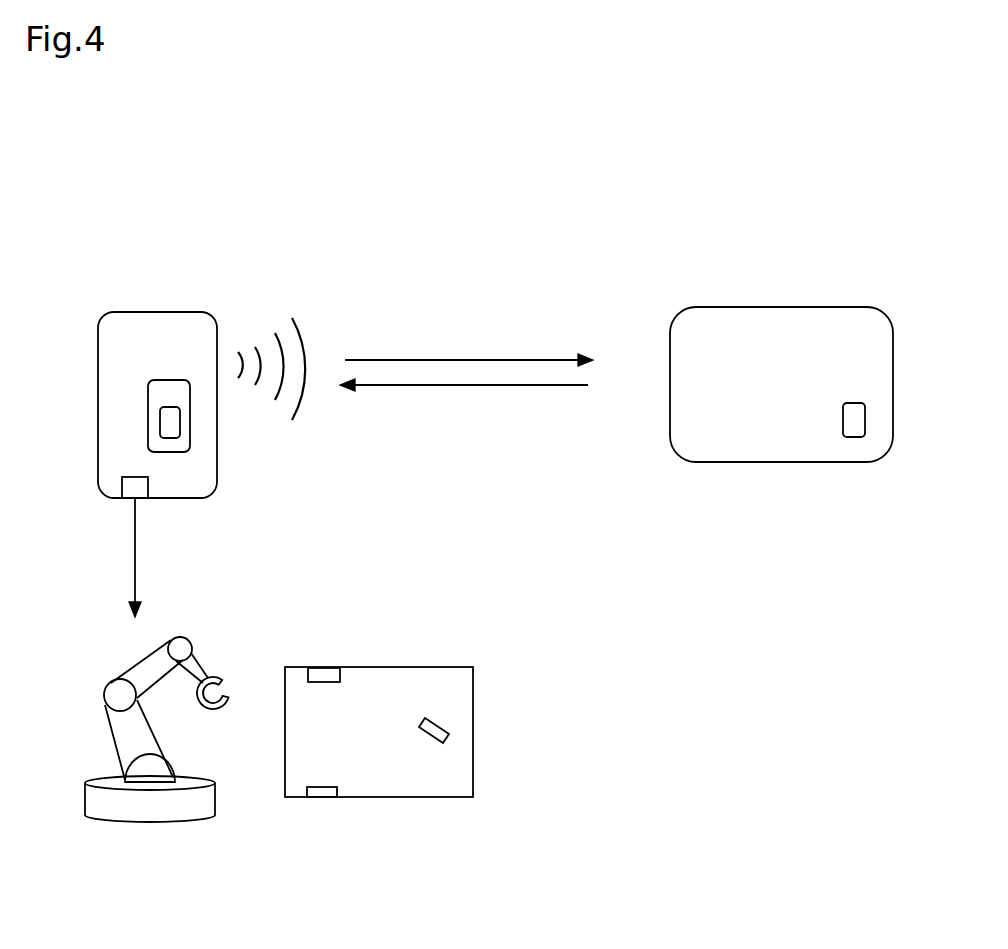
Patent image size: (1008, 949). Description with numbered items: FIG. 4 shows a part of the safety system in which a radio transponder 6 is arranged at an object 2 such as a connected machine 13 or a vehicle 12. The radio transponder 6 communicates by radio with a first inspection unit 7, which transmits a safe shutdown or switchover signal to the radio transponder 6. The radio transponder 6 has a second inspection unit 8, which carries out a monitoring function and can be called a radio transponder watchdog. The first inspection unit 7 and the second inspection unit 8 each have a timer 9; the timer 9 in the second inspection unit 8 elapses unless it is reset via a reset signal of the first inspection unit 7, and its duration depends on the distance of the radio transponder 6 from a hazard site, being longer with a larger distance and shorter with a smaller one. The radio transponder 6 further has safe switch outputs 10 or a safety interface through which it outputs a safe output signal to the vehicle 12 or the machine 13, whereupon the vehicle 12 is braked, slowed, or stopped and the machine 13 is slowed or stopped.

The object 2 is at (279, 772).
The radio transponder 6 is at (170, 312).
The first inspection unit 7 is at (827, 307).
The second inspection unit 8 is at (173, 380).
The timer 9 is at (160, 418).
The safe switch outputs 10 is at (122, 482).
The vehicle 12 is at (384, 823).
The machine 13 is at (171, 852).